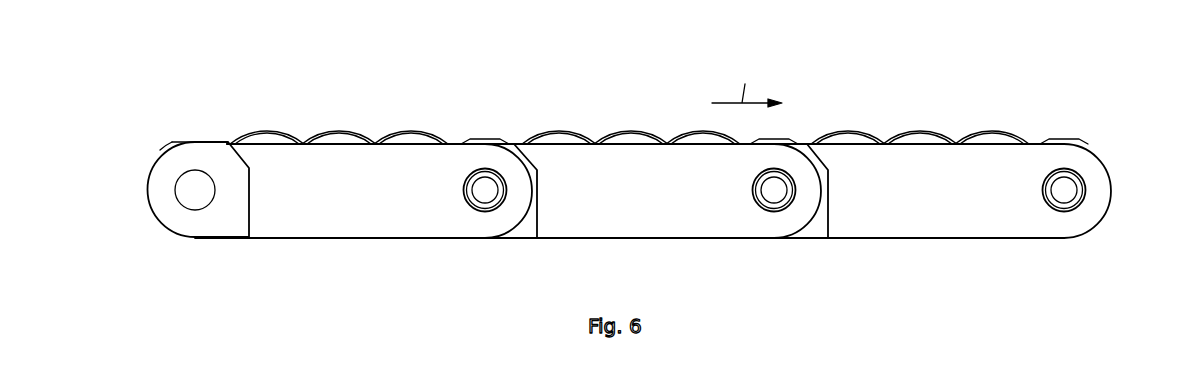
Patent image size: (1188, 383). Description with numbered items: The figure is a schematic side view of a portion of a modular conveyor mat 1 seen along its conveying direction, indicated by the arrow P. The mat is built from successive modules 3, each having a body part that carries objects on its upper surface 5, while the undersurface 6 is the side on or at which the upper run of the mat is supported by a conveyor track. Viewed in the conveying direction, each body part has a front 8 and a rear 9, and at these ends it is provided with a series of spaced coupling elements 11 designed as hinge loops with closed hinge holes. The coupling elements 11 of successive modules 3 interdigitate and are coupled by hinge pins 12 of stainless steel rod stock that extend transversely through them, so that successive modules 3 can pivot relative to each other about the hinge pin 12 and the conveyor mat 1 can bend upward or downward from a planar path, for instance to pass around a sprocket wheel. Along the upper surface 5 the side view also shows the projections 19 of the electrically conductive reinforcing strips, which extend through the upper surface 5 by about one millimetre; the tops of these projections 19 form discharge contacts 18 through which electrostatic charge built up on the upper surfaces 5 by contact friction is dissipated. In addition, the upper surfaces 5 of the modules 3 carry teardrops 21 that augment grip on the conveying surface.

The modular conveyor mat 1 is at (629, 166).
The module 3 is at (343, 178).
The upper surface 5 is at (454, 143).
The undersurface 6 is at (295, 240).
The front 8 is at (1113, 212).
The rear 9 is at (143, 212).
The coupling element 11 is at (1088, 170).
The hinge pin 12 is at (483, 188).
The discharge contact 18 is at (192, 132).
The projection 19 is at (202, 140).
The teardrop 21 is at (267, 138).